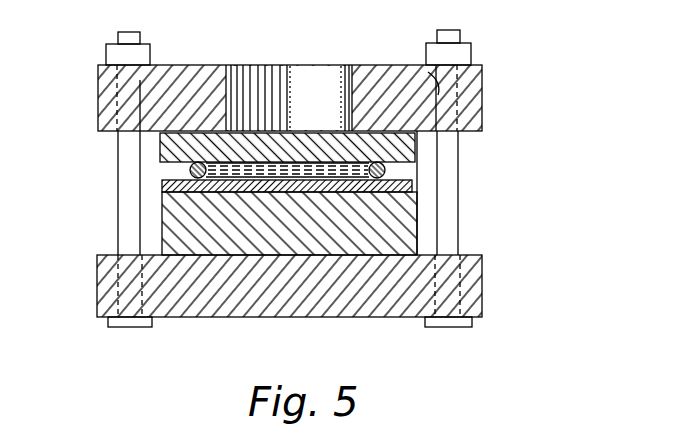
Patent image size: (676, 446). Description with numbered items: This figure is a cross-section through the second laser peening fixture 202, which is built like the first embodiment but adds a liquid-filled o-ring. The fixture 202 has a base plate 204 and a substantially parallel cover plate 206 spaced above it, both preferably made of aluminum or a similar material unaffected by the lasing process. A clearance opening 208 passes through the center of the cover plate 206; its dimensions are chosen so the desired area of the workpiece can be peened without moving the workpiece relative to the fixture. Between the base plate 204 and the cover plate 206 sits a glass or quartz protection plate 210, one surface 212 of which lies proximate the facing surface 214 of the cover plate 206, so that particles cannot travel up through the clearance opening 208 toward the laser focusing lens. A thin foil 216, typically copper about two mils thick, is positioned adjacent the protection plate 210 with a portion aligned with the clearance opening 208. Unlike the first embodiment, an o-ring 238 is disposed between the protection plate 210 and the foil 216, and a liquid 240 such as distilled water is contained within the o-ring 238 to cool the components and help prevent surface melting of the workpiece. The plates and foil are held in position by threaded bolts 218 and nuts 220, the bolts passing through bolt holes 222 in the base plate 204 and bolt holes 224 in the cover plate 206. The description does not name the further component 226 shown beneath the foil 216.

The fixture 202 is at (362, 63).
The base plate 204 is at (482, 302).
The cover plate 206 is at (485, 97).
The clearance opening 208 is at (226, 95).
The protection plate 210 is at (415, 147).
The surface of protection plate 212 is at (150, 132).
The surface of cover plate 214 is at (110, 130).
The foil 216 is at (412, 186).
The threaded bolts 218 is at (107, 328).
The nuts 220 is at (150, 45).
The bolt holes 222 is at (118, 305).
The bolt holes 224 is at (148, 74).
The support block 226 is at (417, 215).
The o-ring 238 is at (190, 172).
The liquid 240 is at (276, 178).